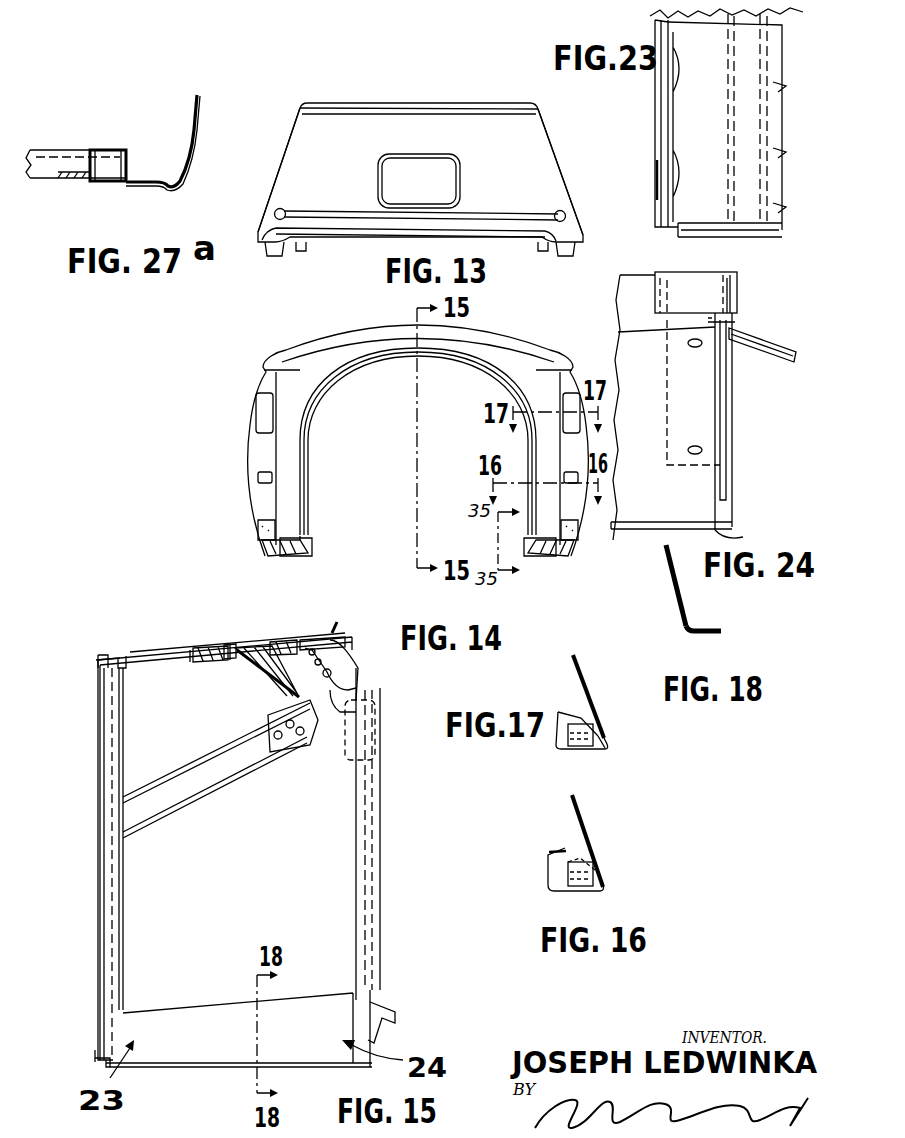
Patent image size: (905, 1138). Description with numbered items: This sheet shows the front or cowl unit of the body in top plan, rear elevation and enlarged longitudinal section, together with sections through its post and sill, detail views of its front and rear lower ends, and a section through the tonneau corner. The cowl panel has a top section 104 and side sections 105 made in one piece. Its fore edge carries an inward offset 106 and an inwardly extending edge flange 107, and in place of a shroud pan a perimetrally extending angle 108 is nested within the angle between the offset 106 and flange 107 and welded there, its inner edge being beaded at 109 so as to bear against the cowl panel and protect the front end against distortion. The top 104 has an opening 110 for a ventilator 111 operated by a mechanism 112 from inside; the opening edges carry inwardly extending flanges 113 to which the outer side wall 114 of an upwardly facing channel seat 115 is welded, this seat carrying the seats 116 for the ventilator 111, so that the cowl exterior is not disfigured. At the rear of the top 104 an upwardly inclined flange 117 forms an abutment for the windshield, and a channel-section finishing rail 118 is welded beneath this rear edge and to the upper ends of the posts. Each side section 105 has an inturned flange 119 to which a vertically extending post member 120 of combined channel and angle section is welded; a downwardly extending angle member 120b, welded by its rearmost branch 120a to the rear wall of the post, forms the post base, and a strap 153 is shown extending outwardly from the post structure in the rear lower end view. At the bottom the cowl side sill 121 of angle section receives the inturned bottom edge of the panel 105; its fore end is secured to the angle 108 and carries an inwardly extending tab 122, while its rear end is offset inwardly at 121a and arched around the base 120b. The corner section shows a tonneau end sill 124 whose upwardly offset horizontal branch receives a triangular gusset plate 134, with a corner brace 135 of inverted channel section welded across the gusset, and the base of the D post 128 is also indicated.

In FIG. 13, the top section of cowl panel 104 is at (536, 172).
In FIG. 15, the top section of cowl panel 104 is at (145, 647).
In FIG. 13, the side section of cowl panel 105 is at (548, 174).
In FIG. 23, the side section of cowl panel 105 is at (716, 22).
In FIG. 24, the side section of cowl panel 105 is at (697, 407).
In FIG. 15, the side section of cowl panel 105 is at (235, 852).
In FIG. 17, the side section of cowl panel 105 is at (589, 684).
In FIG. 16, the side section of cowl panel 105 is at (590, 829).
In FIG. 18, the side section of cowl panel 105 is at (668, 565).
In FIG. 13, the inward offset 106 is at (406, 109).
In FIG. 15, the inward offset 106 is at (102, 657).
In FIG. 23, the edge flange 107 is at (660, 146).
In FIG. 15, the edge flange 107 is at (98, 673).
In FIG. 23, the perimetrally extending angle 108 is at (664, 126).
In FIG. 15, the perimetrally extending angle 108 is at (125, 687).
In FIG. 15, the bead 109 is at (125, 650).
In FIG. 15, the opening 110 is at (230, 650).
In FIG. 13, the ventilator 111 is at (419, 181).
In FIG. 15, the ventilator 111 is at (262, 641).
In FIG. 15, the operating mechanism 112 is at (273, 668).
In FIG. 15, the inwardly extending flanges 113 is at (193, 662).
In FIG. 15, the outer side wall 114 is at (188, 656).
In FIG. 15, the channel seat 115 is at (223, 652).
In FIG. 15, the seats 116 is at (222, 647).
In FIG. 13, the upwardly inclined flange 117 is at (352, 212).
In FIG. 14, the upwardly inclined flange 117 is at (512, 343).
In FIG. 15, the upwardly inclined flange 117 is at (332, 633).
In FIG. 13, the finishing rail 118 is at (352, 231).
In FIG. 15, the finishing rail 118 is at (350, 650).
In FIG. 13, the inturned flange 119 is at (258, 232).
In FIG. 15, the inturned flange 119 is at (378, 888).
In FIG. 17, the inturned flange 119 is at (606, 732).
In FIG. 16, the inturned flange 119 is at (605, 868).
In FIG. 13, the post member 120 is at (300, 251).
In FIG. 24, the post member 120 is at (696, 292).
In FIG. 15, the post member 120 is at (360, 855).
In FIG. 17, the post member 120 is at (560, 742).
In FIG. 16, the post member 120 is at (553, 865).
In FIG. 24, the rearmost branch 120a is at (728, 286).
In FIG. 24, the angle member 120b is at (735, 323).
In FIG. 23, the cowl side sill 121 is at (750, 92).
In FIG. 24, the cowl side sill 121 is at (652, 520).
In FIG. 15, the cowl side sill 121 is at (246, 1028).
In FIG. 18, the cowl side sill 121 is at (688, 620).
In FIG. 15, the inward offset of sill rear end 121a is at (280, 748).
In FIG. 23, the inwardly extending tab 122 is at (670, 178).
In FIG. 15, the inwardly extending tab 122 is at (107, 1036).
In FIG. 27A, the tonneau end sill 124 is at (190, 143).
In FIG. 24, the D post base 128 is at (727, 470).
In FIG. 27A, the triangular gusset plate 134 is at (99, 184).
In FIG. 27A, the corner brace 135 is at (77, 148).
In FIG. 13, the strap 153 is at (272, 256).
In FIG. 24, the strap 153 is at (768, 358).